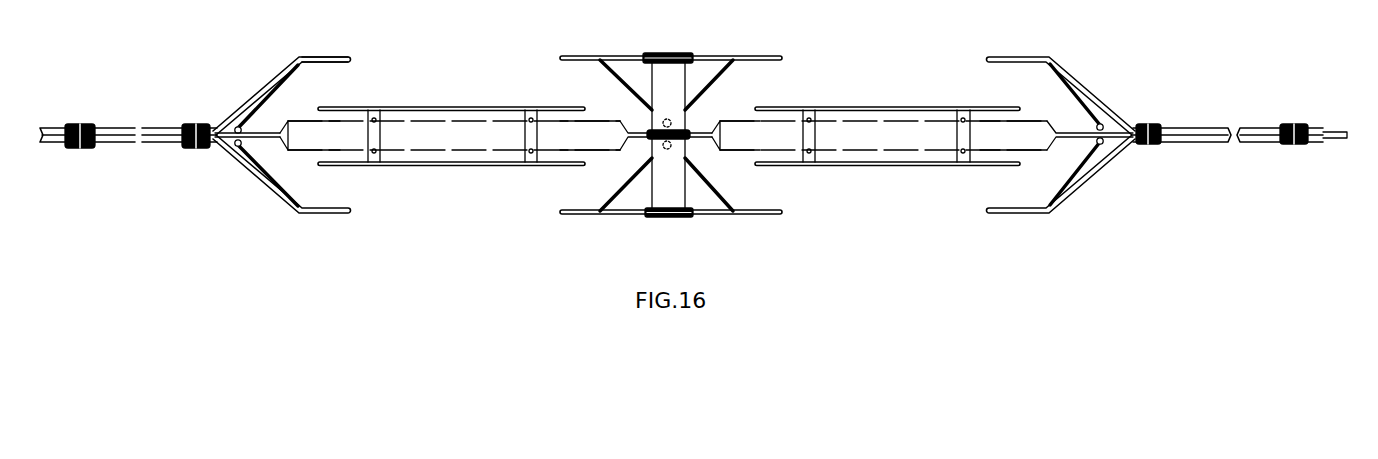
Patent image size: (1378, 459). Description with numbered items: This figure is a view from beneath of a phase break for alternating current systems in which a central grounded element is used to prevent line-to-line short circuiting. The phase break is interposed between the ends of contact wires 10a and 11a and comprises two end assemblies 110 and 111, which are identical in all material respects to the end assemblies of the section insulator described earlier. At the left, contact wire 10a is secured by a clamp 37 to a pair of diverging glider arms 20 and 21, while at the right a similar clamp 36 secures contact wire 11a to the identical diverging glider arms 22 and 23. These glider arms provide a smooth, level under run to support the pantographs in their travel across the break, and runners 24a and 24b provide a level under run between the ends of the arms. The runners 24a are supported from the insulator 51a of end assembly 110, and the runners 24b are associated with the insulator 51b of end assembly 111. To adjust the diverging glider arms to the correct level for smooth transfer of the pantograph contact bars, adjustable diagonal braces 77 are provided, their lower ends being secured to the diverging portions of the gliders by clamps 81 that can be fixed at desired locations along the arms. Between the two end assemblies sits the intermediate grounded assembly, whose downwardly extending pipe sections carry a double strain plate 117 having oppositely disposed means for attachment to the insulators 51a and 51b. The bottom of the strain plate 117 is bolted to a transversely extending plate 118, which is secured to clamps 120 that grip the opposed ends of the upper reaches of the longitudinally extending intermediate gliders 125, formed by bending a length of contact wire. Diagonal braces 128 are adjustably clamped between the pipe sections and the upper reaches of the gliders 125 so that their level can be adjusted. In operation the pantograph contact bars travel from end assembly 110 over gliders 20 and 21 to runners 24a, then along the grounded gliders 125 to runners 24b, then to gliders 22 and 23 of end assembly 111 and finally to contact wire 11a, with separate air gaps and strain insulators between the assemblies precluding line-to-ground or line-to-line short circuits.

The contact wire 10a is at (57, 142).
The contact wire 11a is at (1330, 140).
The end assembly 110 is at (238, 161).
The end assembly 111 is at (1062, 212).
The glider arm 20 is at (264, 90).
The glider arm 21 is at (262, 197).
The glider arm 22 is at (1067, 85).
The glider arm 23 is at (1090, 178).
The adjustable diagonal brace 77 is at (268, 96).
The clamp 81 is at (307, 62).
The runner 24a is at (478, 86).
The runner 24b is at (912, 83).
The insulator 51a is at (397, 148).
The insulator 51b is at (742, 142).
The double strain plate 117 is at (684, 131).
The transversely extending plate 118 is at (666, 75).
The clamp 120 is at (676, 54).
The intermediate glider 125 is at (572, 56).
The diagonal brace 128 is at (612, 80).
The clamp 36 is at (1285, 123).
The clamp 37 is at (1147, 123).